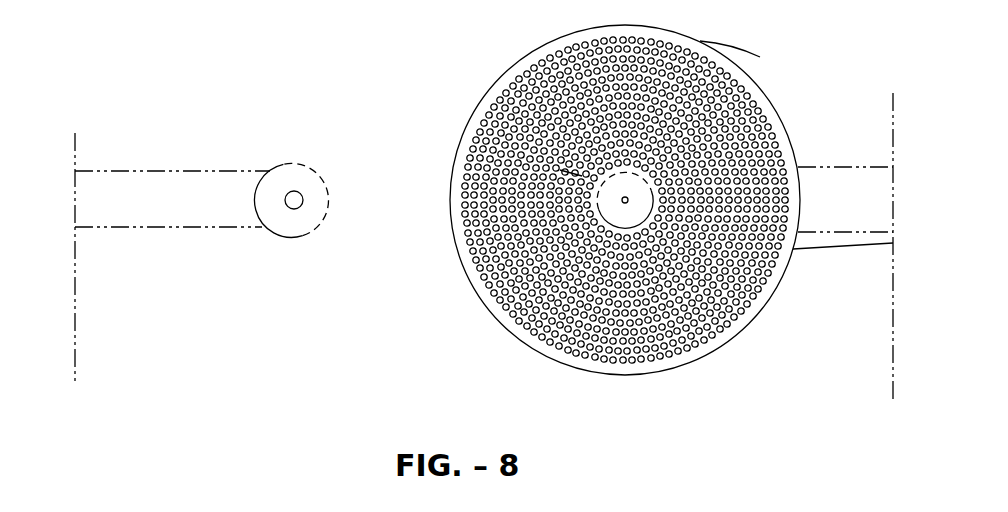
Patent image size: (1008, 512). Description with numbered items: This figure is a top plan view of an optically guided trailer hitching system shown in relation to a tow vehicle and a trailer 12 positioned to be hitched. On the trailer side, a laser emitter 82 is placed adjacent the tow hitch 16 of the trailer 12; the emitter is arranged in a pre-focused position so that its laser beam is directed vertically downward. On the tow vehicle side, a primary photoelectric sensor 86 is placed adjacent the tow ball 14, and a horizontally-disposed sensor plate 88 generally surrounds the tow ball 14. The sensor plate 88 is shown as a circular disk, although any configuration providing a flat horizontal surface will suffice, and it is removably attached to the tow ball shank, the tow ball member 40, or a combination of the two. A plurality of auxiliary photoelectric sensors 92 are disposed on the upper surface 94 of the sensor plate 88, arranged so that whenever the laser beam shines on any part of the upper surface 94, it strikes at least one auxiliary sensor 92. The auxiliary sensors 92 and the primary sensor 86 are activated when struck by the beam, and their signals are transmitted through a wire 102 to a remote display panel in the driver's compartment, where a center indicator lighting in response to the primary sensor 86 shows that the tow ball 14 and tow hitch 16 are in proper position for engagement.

The trailer 12 is at (78, 160).
The tow hitch 16 is at (320, 168).
The laser emitter 82 is at (294, 191).
The tow ball 14 is at (582, 176).
The primary photoelectric sensor 86 is at (628, 200).
The sensor plate 88 is at (551, 367).
The auxiliary photoelectric sensors 92 is at (512, 313).
The upper surface 94 is at (698, 42).
The tow ball member 40 is at (870, 167).
The wire 102 is at (868, 249).